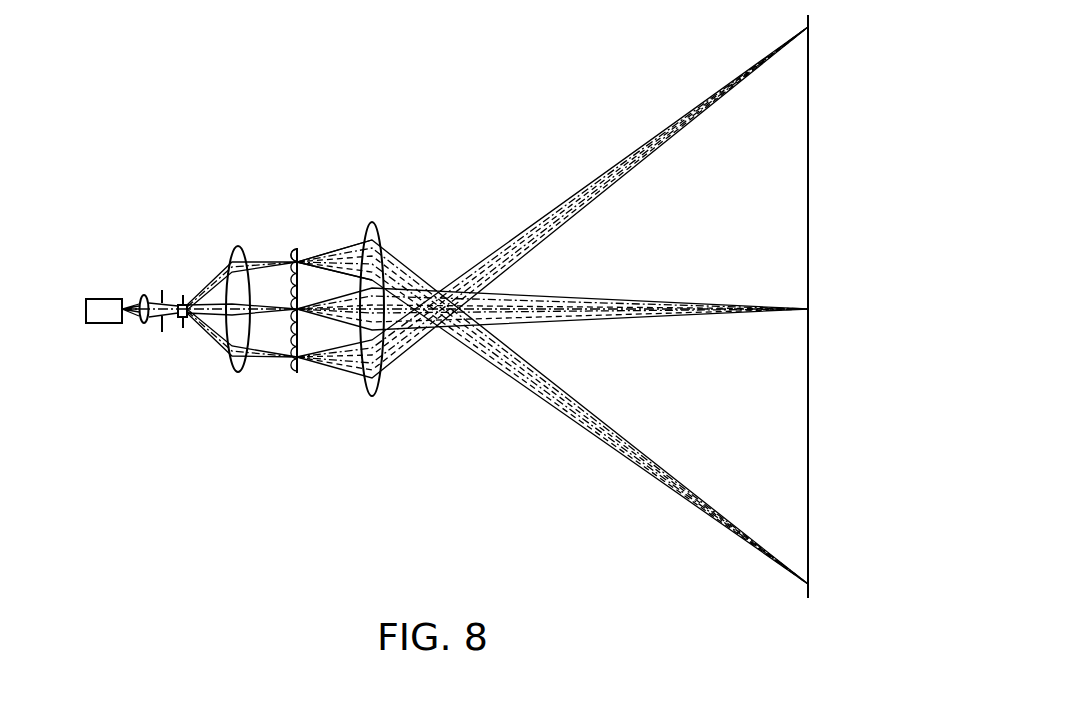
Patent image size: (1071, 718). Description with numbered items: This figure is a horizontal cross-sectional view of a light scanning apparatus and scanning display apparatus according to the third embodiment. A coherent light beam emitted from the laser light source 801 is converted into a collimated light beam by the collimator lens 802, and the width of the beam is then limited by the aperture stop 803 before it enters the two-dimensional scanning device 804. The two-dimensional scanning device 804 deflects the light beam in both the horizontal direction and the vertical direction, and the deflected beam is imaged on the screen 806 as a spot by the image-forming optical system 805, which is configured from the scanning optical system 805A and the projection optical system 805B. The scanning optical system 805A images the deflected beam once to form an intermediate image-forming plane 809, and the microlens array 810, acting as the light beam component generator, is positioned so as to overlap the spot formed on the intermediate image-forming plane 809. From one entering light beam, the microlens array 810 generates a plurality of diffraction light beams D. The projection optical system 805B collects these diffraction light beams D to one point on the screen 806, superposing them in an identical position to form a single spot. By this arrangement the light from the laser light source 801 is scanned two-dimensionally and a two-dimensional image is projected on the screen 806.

The laser light source 801 is at (97, 332).
The collimator lens 802 is at (139, 331).
The aperture stop 803 is at (162, 333).
The two-dimensional scanning device 804 is at (185, 332).
The image-forming optical system 805 is at (308, 369).
The scanning optical system 805A is at (238, 380).
The projection optical system 805B is at (364, 340).
The screen 806 is at (800, 257).
The intermediate image-forming plane 809 is at (296, 243).
The microlens array 810 is at (285, 255).
The diffraction light beams D is at (320, 243).